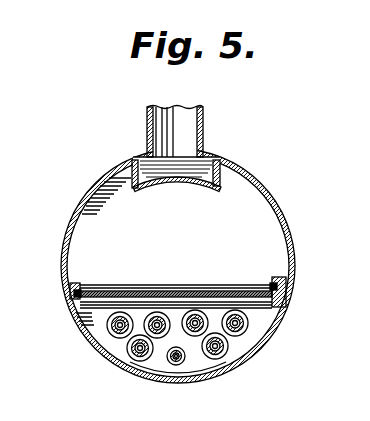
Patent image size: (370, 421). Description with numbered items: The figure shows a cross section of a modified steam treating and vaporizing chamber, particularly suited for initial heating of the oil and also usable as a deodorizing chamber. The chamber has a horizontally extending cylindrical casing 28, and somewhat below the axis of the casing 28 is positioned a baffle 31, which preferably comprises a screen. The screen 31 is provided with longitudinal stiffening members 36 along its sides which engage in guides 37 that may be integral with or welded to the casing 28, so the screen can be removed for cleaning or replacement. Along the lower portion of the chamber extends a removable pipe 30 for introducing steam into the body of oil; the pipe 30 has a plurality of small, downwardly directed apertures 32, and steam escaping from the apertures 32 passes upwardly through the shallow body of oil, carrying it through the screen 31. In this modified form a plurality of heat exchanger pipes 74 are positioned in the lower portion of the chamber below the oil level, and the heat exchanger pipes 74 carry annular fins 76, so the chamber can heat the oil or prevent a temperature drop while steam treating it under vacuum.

The cylindrical casing 28 is at (113, 170).
The pipe 30 is at (190, 379).
The baffle 31 is at (237, 292).
The small apertures 32 is at (175, 366).
The longitudinal stiffening members 36 is at (74, 293).
The guides 37 is at (78, 283).
The heat exchanger pipes 74 is at (238, 331).
The annular fins 76 is at (248, 323).